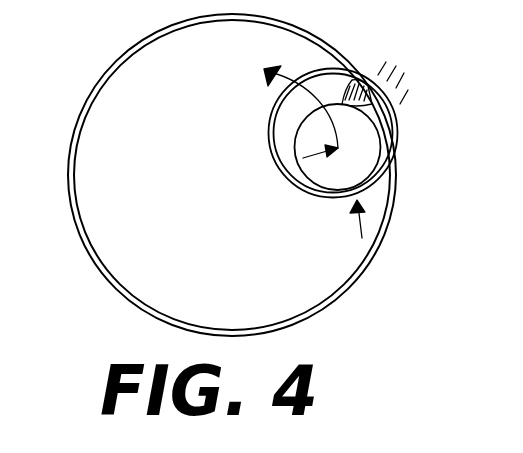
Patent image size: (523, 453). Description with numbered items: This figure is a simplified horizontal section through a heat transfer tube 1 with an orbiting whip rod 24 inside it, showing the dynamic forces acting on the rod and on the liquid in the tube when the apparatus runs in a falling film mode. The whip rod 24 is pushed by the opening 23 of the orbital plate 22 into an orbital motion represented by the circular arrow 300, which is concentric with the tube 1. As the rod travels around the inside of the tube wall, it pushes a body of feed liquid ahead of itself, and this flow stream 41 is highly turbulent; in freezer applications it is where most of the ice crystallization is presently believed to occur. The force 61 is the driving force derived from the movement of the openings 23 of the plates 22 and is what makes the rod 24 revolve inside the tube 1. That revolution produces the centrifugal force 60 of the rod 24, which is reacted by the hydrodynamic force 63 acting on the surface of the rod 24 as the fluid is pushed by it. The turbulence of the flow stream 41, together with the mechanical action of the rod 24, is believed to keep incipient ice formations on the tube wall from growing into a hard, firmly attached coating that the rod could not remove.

The tube 1 is at (351, 292).
The orbital plate 22 is at (398, 78).
The opening 23 is at (394, 162).
The whip rod 24 is at (318, 174).
The flow stream 41 is at (358, 94).
The centrifugal force 60 is at (321, 159).
The driving force 61 is at (356, 228).
The hydrodynamic force 63 is at (359, 95).
The circular arrow 300 is at (308, 90).